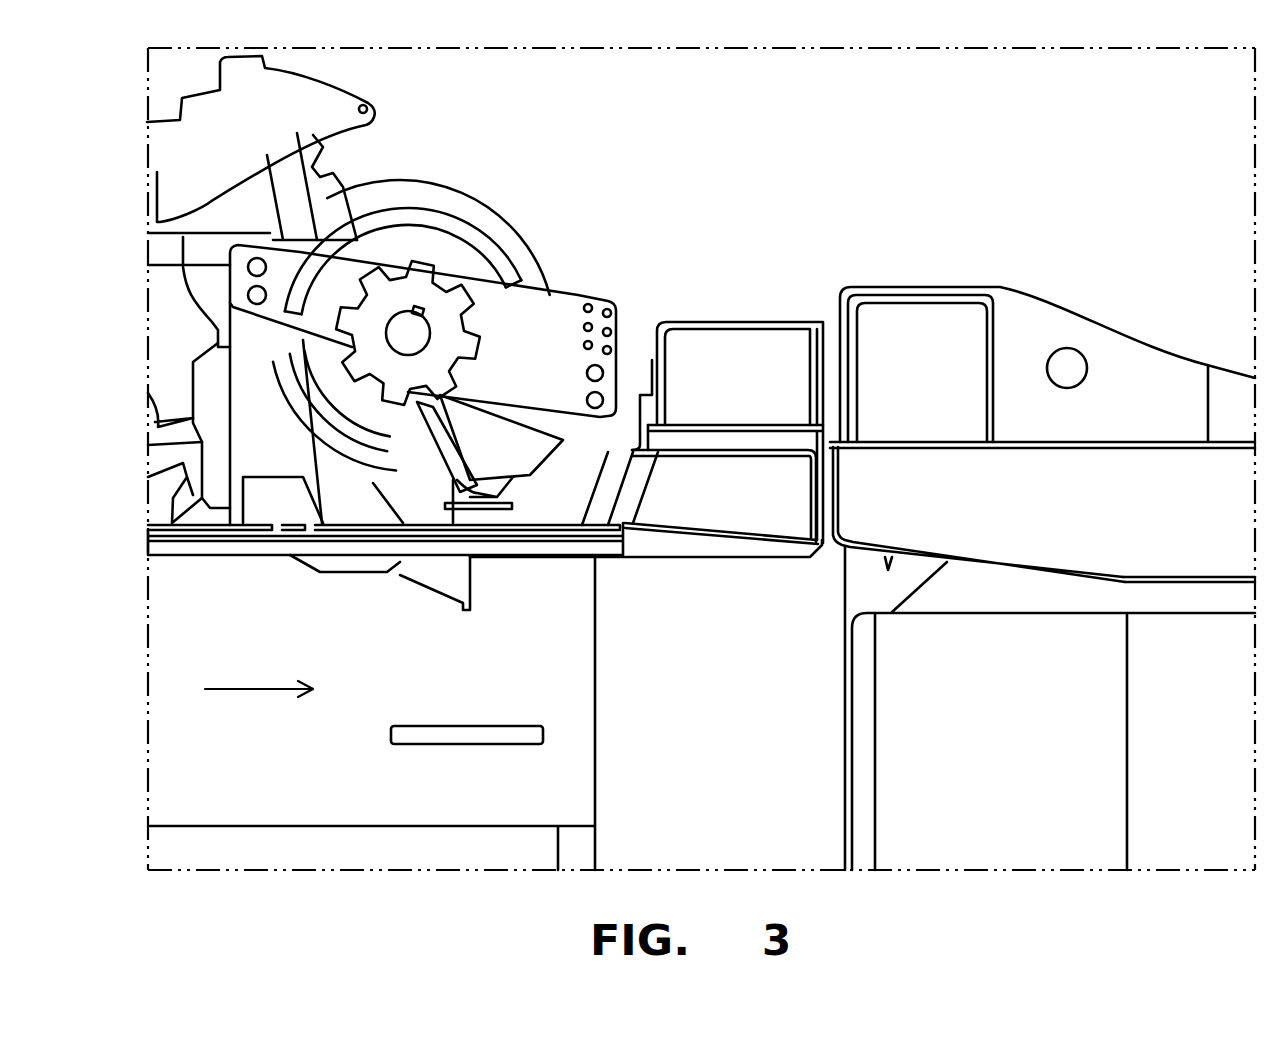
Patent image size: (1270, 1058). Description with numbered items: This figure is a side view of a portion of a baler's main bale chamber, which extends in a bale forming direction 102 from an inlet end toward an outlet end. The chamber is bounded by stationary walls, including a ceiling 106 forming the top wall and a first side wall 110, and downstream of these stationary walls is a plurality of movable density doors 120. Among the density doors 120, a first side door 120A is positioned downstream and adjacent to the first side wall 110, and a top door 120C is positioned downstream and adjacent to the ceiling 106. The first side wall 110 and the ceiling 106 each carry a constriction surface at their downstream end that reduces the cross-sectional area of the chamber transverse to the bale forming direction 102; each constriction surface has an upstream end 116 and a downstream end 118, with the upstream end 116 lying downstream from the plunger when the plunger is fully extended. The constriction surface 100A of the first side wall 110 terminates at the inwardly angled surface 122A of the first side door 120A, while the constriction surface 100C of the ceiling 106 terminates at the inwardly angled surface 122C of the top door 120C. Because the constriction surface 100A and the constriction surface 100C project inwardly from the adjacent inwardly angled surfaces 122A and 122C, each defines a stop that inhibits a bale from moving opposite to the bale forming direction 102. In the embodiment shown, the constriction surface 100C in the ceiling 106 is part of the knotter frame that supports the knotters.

The bale forming direction 102 is at (260, 692).
The ceiling 106 is at (216, 568).
The first side wall 110 is at (330, 840).
The constriction surface of the first side wall 100A is at (736, 732).
The constriction surface of the ceiling 100C is at (731, 543).
The upstream end 116 is at (633, 533).
The downstream end 118 is at (810, 553).
The density doors 120 is at (1010, 600).
The first side door 120A is at (1177, 612).
The top door 120C is at (1139, 319).
The inwardly angled surface of the first side door 122A is at (1067, 737).
The inwardly angled surface of the top door 122C is at (898, 548).